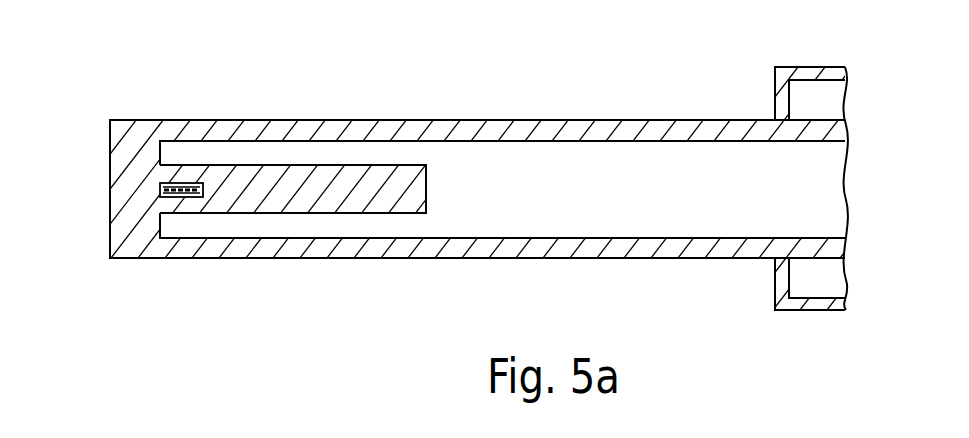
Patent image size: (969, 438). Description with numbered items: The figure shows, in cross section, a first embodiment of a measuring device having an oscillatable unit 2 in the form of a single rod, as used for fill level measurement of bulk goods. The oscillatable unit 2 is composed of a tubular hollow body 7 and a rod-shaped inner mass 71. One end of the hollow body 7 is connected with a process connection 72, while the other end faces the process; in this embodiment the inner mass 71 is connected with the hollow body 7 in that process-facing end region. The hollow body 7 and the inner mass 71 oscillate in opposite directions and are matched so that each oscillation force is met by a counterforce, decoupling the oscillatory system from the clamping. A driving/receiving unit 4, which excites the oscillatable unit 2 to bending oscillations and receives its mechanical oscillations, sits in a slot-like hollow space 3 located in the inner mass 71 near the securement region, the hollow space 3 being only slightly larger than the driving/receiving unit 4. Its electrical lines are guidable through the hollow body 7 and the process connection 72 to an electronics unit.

The oscillatable unit 2 is at (203, 76).
The hollow space 3 is at (160, 190).
The driving/receiving unit 4 is at (196, 198).
The hollow body 7 is at (457, 120).
The inner mass 71 is at (260, 196).
The process connection 72 is at (818, 312).